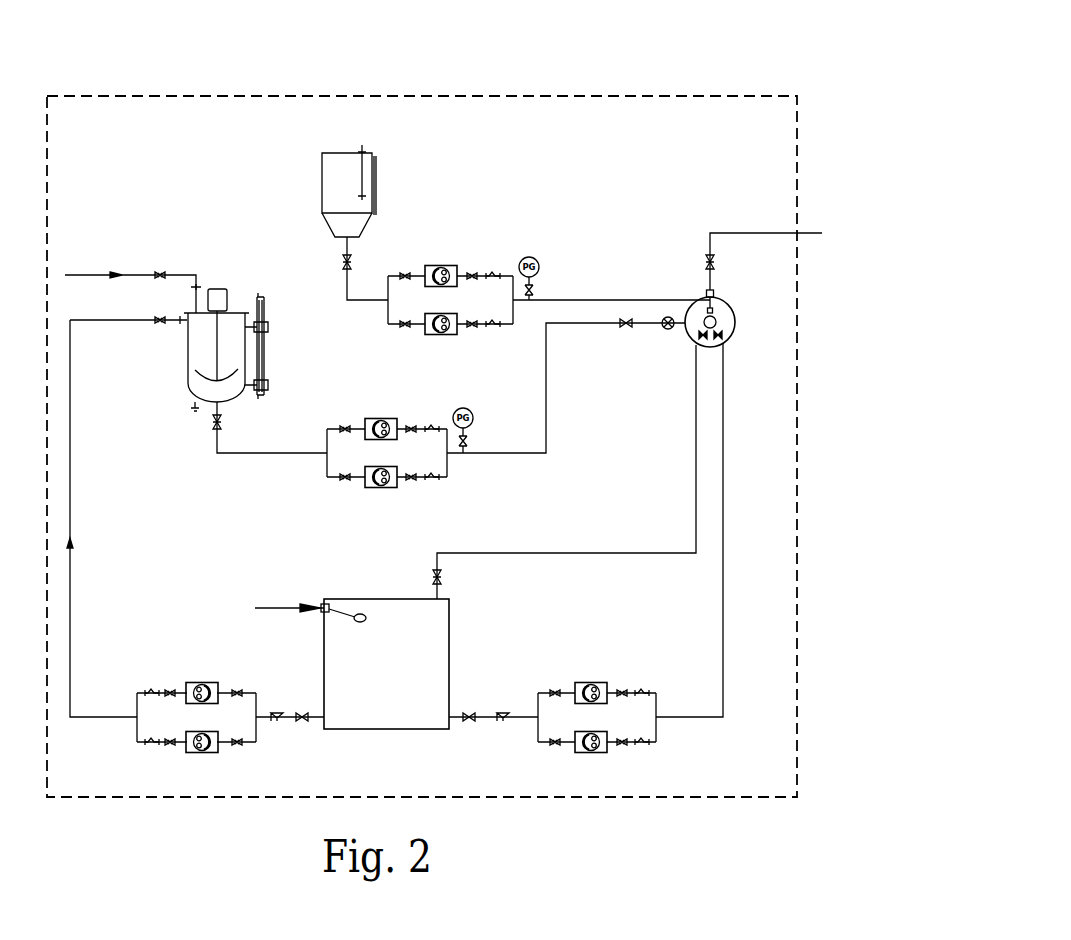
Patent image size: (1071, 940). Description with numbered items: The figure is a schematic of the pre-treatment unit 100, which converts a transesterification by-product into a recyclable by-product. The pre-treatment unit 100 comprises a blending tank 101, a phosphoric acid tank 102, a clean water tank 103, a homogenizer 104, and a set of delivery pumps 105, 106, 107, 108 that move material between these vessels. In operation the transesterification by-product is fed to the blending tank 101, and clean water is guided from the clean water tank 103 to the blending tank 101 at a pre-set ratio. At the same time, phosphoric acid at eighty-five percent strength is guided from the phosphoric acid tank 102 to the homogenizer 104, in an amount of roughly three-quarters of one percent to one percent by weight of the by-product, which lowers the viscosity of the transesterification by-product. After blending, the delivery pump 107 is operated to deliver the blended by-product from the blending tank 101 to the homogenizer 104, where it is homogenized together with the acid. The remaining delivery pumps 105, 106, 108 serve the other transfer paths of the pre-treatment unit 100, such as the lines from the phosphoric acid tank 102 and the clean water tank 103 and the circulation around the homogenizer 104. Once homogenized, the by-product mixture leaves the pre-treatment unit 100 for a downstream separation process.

The pre-treatment unit 100 is at (385, 94).
The blending tank 101 is at (198, 359).
The phosphoric acid tank 102 is at (335, 198).
The clean water tank 103 is at (435, 662).
The homogenizer 104 is at (735, 332).
The delivery pump 105 is at (195, 680).
The delivery pump 106 is at (446, 260).
The delivery pump 107 is at (382, 410).
The delivery pump 108 is at (593, 677).